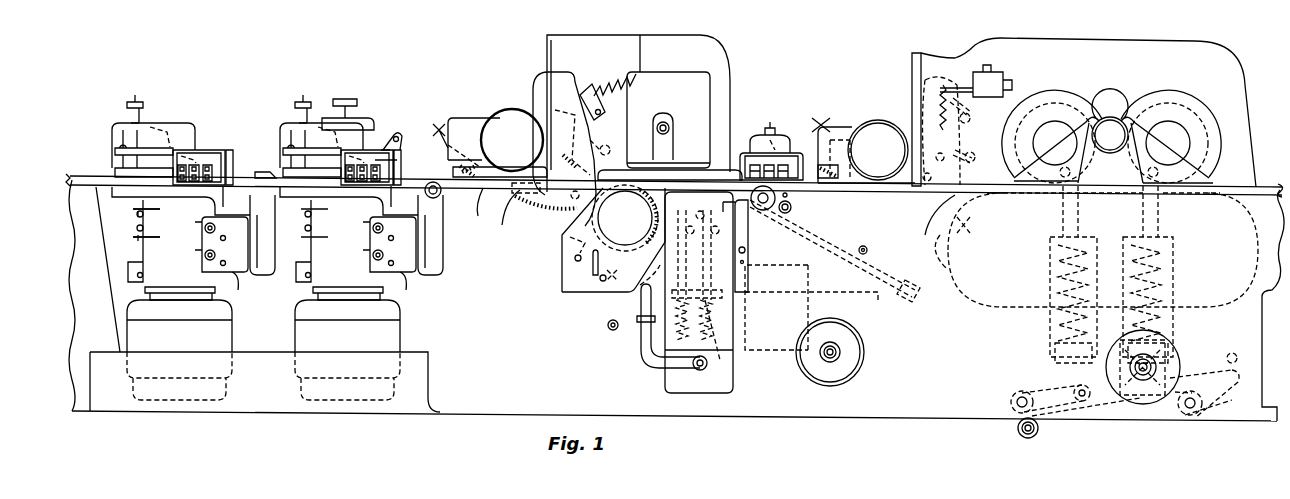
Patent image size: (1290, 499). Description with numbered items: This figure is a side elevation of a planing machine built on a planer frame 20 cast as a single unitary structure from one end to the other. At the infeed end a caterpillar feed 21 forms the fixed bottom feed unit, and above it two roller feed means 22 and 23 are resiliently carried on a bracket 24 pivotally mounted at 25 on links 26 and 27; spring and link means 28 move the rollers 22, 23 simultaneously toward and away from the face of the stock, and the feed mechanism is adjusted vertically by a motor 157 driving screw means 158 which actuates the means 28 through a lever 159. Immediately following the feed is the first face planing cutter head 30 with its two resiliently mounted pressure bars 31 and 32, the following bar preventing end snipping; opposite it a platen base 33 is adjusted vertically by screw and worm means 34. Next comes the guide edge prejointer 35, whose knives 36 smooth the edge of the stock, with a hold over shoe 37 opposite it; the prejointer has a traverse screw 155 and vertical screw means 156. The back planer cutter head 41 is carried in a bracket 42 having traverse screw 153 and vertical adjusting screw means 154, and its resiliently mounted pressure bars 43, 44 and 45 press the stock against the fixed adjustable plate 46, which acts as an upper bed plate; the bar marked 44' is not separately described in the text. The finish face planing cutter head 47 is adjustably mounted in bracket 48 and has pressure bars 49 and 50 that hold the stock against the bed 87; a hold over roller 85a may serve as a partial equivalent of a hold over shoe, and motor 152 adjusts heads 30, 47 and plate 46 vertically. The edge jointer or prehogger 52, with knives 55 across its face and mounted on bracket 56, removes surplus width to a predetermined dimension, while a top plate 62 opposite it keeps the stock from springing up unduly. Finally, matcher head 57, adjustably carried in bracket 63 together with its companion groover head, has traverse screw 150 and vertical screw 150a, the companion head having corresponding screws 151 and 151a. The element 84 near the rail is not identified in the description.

The planer frame 20 is at (492, 405).
The caterpillar feed 21 is at (985, 298).
The roller feed means 22 is at (1196, 110).
The roller feed means 23 is at (1057, 108).
The roller bracket 24 is at (1110, 94).
The pivot mounting 25 is at (1110, 127).
The link 26 is at (1150, 216).
The link 27 is at (1072, 216).
The spring and link means 28 is at (1040, 382).
The first face planing cutter head 30 is at (873, 116).
The pressure bar 31 is at (906, 187).
The pressure bar 32 is at (851, 187).
The platen base 33 is at (880, 302).
The screw and worm means 34 is at (878, 238).
The guide edge prejointer 35 is at (786, 150).
The knives 36 is at (750, 153).
The hold over shoe 37 is at (772, 190).
The back planer cutter head 41 is at (650, 212).
The bracket 42 is at (583, 288).
The pressure bar 43 is at (708, 192).
The pressure bar 44 is at (699, 266).
The pivot arm 44' is at (608, 197).
The pressure bar 45 is at (581, 149).
The fixed adjustable plate 46 is at (633, 176).
The finish face planing cutter head 47 is at (505, 107).
The bracket 48 is at (458, 127).
The pressure bar 49 is at (537, 208).
The pressure bar 50 is at (508, 182).
The edge jointer 52 is at (408, 142).
The knives 55 is at (373, 163).
The bracket 56 is at (355, 122).
The matcher head 57 is at (220, 160).
The top plate 62 is at (262, 172).
The bracket 63 is at (222, 197).
The rail 84 is at (1233, 191).
The hold over roller 85a is at (1276, 182).
The bed 87 is at (463, 188).
The traverse screw 150 is at (205, 256).
The vertical adjustment screw 150a is at (133, 243).
The traverse screw 151 is at (205, 228).
The vertical adjustment screw 151a is at (133, 213).
The motor 152 is at (855, 361).
The traverse screw 153 is at (600, 283).
The vertical adjusting screw means 154 is at (609, 330).
The traverse screw 155 is at (783, 215).
The vertical adjustment screw means 156 is at (788, 205).
The motor 157 is at (1112, 392).
The screw means 158 is at (1175, 360).
The lever 159 is at (1228, 390).